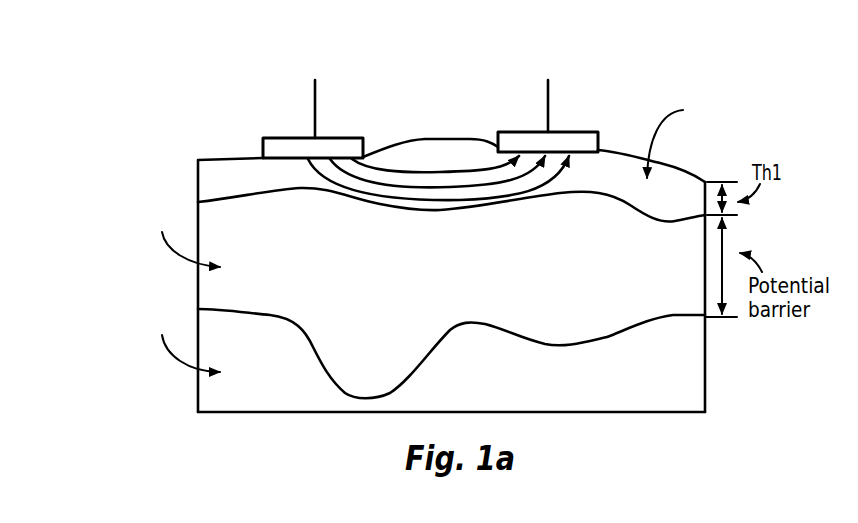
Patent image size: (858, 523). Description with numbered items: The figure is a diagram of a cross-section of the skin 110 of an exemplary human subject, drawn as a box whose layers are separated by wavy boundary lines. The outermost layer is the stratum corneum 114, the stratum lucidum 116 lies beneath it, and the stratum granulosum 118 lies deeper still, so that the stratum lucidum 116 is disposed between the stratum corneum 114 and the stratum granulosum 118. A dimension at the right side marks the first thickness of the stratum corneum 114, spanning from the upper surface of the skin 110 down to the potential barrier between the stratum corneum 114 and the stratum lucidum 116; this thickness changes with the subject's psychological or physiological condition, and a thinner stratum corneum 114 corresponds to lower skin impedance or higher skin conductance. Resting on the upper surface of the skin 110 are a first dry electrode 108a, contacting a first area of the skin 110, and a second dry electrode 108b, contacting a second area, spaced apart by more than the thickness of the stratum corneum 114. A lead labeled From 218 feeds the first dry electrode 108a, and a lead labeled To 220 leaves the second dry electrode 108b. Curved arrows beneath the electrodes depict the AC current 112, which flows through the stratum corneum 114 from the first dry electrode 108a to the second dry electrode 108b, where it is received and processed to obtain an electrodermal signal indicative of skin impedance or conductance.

The skin 110 is at (148, 140).
The first dry electrode 108a is at (288, 137).
The second dry electrode 108b is at (577, 132).
The AC current 112 is at (452, 156).
The stratum corneum 114 is at (688, 207).
The stratum lucidum 116 is at (293, 264).
The stratum granulosum 118 is at (285, 385).
The signal source connection 218 is at (315, 82).
The signal return connection 220 is at (547, 79).